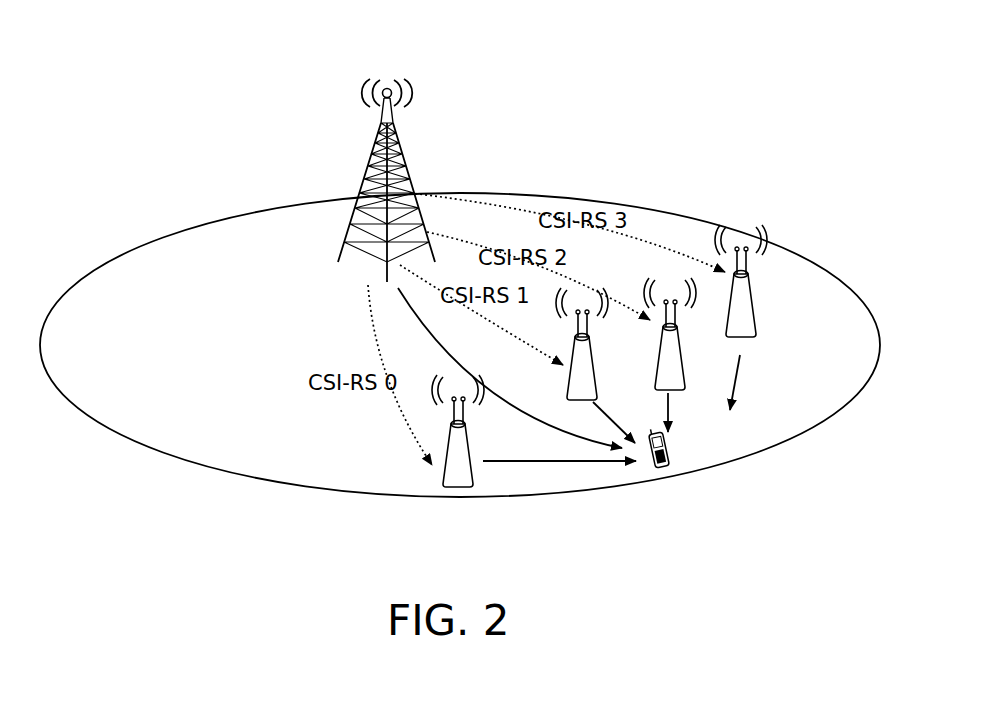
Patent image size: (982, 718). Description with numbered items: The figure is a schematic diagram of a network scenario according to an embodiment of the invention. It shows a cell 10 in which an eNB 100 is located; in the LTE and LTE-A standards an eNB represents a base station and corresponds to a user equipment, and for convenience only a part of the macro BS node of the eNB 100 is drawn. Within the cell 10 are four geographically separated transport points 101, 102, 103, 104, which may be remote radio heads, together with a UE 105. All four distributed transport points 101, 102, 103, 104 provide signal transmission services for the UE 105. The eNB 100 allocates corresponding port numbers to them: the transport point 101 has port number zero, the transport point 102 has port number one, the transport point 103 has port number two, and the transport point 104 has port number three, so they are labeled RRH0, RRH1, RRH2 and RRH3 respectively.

The cell 10 is at (202, 263).
The eNB 100 is at (433, 92).
The transport point 101 is at (450, 493).
The transport point 102 is at (577, 405).
The transport point 103 is at (678, 400).
The transport point 104 is at (763, 322).
The UE 105 is at (668, 466).